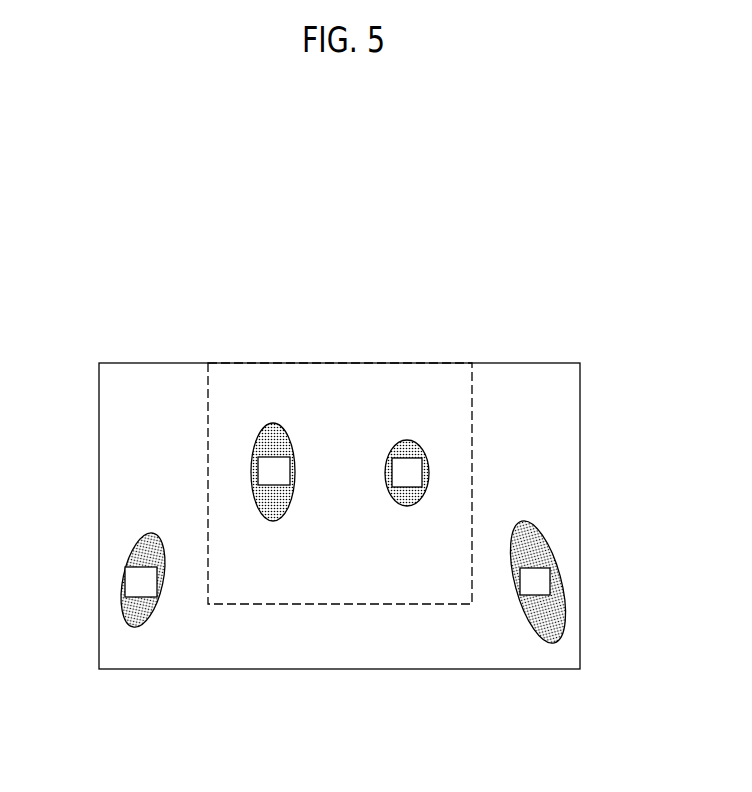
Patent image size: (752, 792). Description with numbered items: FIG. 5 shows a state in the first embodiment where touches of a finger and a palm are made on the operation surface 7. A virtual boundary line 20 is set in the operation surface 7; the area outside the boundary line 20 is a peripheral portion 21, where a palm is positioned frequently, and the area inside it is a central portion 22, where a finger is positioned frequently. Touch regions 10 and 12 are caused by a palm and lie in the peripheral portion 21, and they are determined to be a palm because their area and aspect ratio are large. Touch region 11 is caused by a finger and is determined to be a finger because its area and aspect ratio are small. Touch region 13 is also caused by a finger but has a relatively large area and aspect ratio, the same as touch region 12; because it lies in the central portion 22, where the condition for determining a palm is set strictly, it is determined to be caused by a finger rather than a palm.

The operation surface 7 is at (400, 363).
The touch region 10 is at (537, 528).
The touch region 11 is at (415, 442).
The touch region 12 is at (142, 538).
The touch region 13 is at (267, 433).
The virtual boundary line 20 is at (340, 604).
The peripheral portion 21 is at (528, 467).
The central portion 22 is at (343, 450).